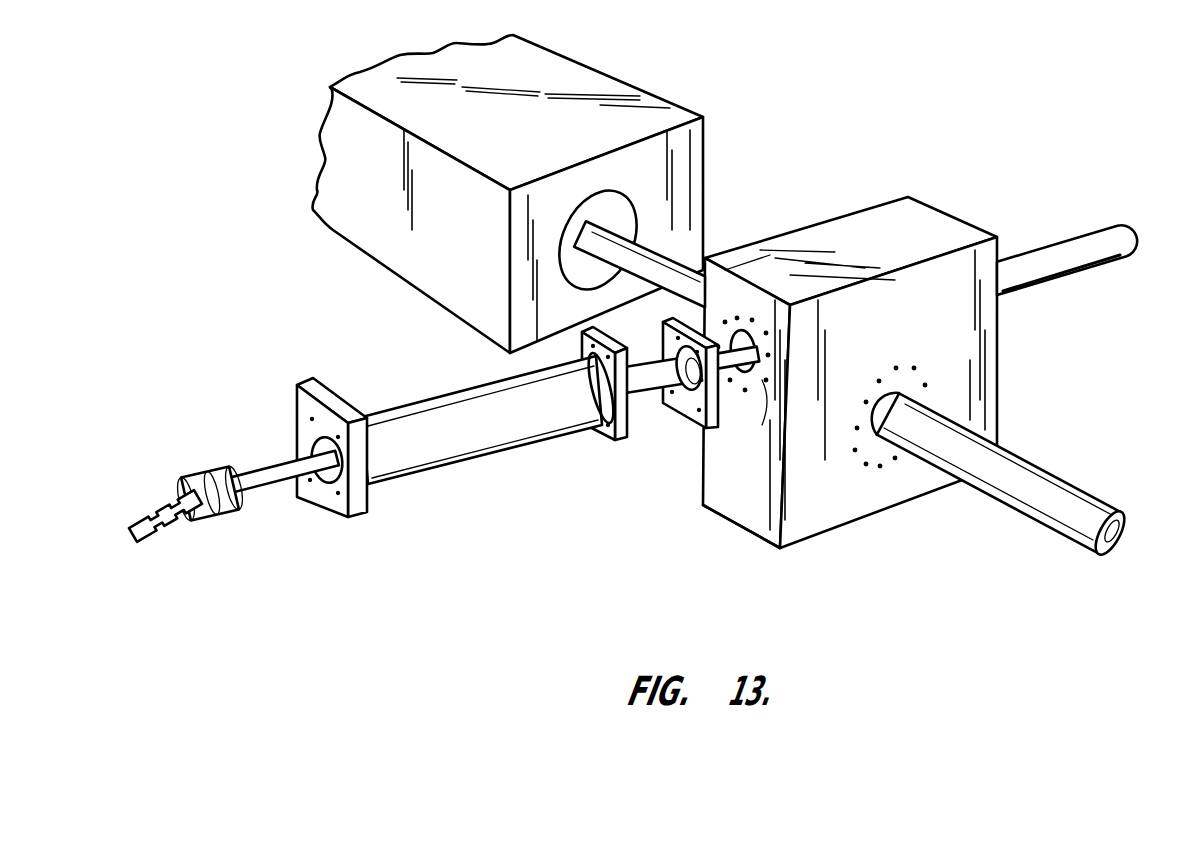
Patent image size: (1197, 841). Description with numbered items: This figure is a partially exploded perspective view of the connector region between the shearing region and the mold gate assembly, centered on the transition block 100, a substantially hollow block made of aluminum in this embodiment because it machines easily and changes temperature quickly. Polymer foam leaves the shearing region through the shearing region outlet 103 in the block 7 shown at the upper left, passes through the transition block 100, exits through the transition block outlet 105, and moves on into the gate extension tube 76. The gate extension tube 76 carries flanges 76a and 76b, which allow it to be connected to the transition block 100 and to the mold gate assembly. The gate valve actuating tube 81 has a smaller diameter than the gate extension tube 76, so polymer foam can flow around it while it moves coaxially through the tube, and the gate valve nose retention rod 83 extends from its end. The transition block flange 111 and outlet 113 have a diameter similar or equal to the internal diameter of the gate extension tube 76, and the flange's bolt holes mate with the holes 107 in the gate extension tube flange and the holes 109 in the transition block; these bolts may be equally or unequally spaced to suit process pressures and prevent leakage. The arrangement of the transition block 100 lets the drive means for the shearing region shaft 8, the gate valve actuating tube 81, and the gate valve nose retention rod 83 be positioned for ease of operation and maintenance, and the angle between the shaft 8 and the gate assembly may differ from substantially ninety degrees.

The bearing block 7 is at (593, 68).
The shearing region shaft 8 is at (652, 253).
The shearing region outlet 103 is at (640, 197).
The transition block outlet 105 is at (752, 330).
The transition block 100 is at (930, 230).
The gate valve actuating tube 81 is at (1067, 240).
The gate valve nose retention rod 83 is at (175, 493).
The gate extension tube 76 is at (517, 447).
The flange 76a is at (360, 520).
The flange 76b is at (620, 448).
The holes 107 is at (605, 440).
The holes 109 is at (762, 380).
The transition block flange 111 is at (710, 507).
The outlet 113 is at (687, 397).